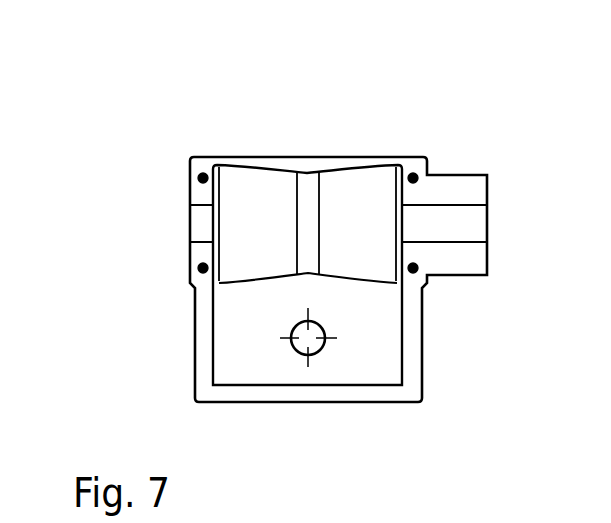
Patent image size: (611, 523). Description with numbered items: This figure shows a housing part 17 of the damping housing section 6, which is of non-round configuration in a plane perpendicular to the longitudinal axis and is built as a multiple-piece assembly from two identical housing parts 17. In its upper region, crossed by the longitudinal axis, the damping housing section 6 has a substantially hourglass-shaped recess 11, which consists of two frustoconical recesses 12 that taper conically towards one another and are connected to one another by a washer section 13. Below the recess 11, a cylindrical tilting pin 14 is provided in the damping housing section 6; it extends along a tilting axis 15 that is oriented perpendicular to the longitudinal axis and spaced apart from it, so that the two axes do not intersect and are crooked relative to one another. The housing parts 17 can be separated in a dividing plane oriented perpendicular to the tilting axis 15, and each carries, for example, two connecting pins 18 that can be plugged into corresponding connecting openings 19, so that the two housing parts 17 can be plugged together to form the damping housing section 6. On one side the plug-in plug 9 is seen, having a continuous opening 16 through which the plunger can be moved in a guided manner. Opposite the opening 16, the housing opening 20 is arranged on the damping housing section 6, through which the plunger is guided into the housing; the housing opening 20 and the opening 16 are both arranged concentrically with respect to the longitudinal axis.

The damping housing section 6 is at (303, 157).
The plug-in plug 9 is at (478, 193).
The hourglass-shaped recess 11 is at (377, 184).
The frustoconical recess 12 is at (258, 200).
The washer section 13 is at (310, 190).
The tilting pin 14 is at (291, 328).
The tilting axis 15 is at (305, 340).
The opening 16 is at (477, 223).
The housing part 17 is at (204, 314).
The connecting pin 18 is at (203, 178).
The connecting opening 19 is at (568, 148).
The housing opening 20 is at (198, 230).